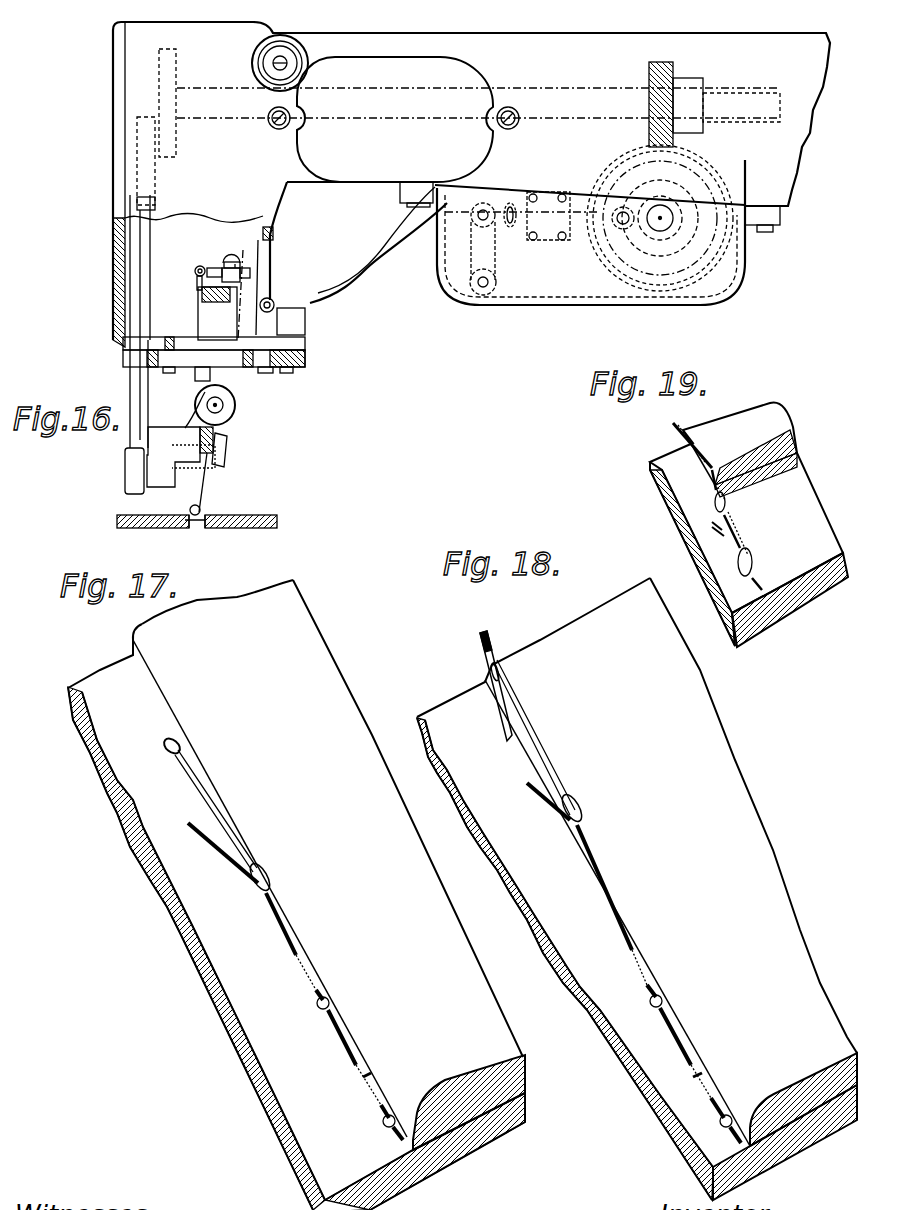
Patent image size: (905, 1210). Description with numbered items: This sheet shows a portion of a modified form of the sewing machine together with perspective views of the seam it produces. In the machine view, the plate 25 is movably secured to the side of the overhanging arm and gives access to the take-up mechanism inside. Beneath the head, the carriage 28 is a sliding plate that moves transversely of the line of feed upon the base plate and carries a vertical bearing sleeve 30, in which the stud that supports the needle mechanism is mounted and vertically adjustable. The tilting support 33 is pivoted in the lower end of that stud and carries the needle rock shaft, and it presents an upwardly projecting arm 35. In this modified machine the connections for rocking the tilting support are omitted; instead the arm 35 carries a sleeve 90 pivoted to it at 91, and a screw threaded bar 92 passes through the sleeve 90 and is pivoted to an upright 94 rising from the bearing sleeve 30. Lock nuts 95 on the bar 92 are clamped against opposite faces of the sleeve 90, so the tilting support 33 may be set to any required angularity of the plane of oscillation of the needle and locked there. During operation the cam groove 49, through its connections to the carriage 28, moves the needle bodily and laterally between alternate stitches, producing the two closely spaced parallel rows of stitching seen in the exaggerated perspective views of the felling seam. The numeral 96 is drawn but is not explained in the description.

The plate 25 is at (393, 119).
The carriage 28 is at (278, 350).
The vertical bearing sleeve 30 is at (210, 329).
The tilting support 33 is at (193, 397).
The upwardly projecting arm 35 is at (234, 258).
The cam groove 49 is at (686, 255).
The sleeve 90 is at (241, 263).
The pivot 91 is at (250, 276).
The screw threaded bar 92 is at (245, 272).
The upright 94 is at (197, 288).
The lock nuts 95 is at (244, 266).
The pin 96 is at (211, 261).